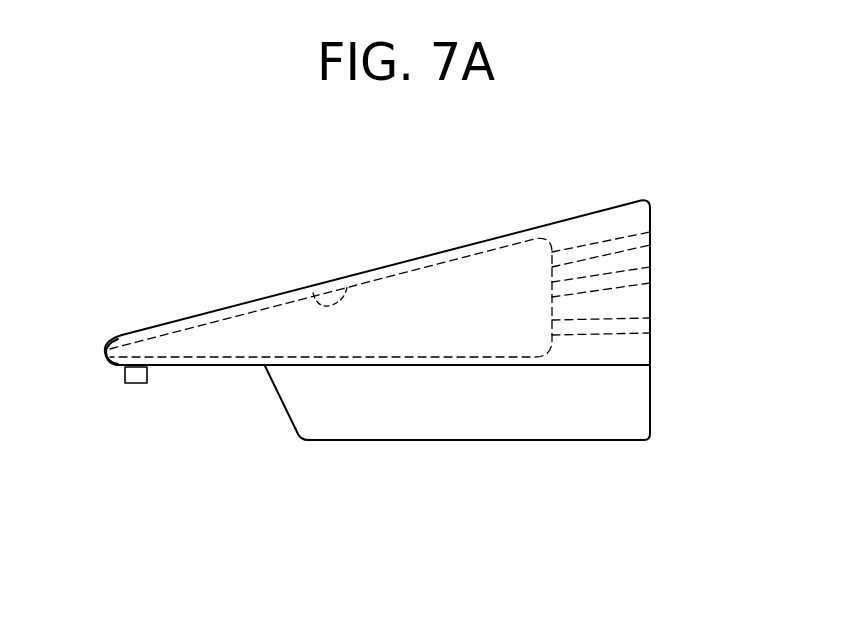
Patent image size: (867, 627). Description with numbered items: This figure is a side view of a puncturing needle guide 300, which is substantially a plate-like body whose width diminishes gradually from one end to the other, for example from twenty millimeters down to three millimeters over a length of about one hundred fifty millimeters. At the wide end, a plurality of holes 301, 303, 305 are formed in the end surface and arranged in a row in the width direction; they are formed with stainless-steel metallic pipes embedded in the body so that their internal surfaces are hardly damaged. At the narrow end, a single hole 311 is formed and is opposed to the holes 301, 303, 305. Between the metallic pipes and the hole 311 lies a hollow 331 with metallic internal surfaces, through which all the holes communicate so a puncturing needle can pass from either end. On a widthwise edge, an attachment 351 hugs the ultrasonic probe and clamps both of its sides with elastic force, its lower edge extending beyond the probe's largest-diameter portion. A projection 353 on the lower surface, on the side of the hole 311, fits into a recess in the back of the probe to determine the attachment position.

The puncturing needle guide 300 is at (352, 153).
The hole 301 is at (650, 236).
The hole 303 is at (650, 268).
The hole 305 is at (650, 320).
The hole 311 is at (105, 350).
The hollow 331 is at (312, 292).
The attachment 351 is at (423, 442).
The projection 353 is at (135, 384).